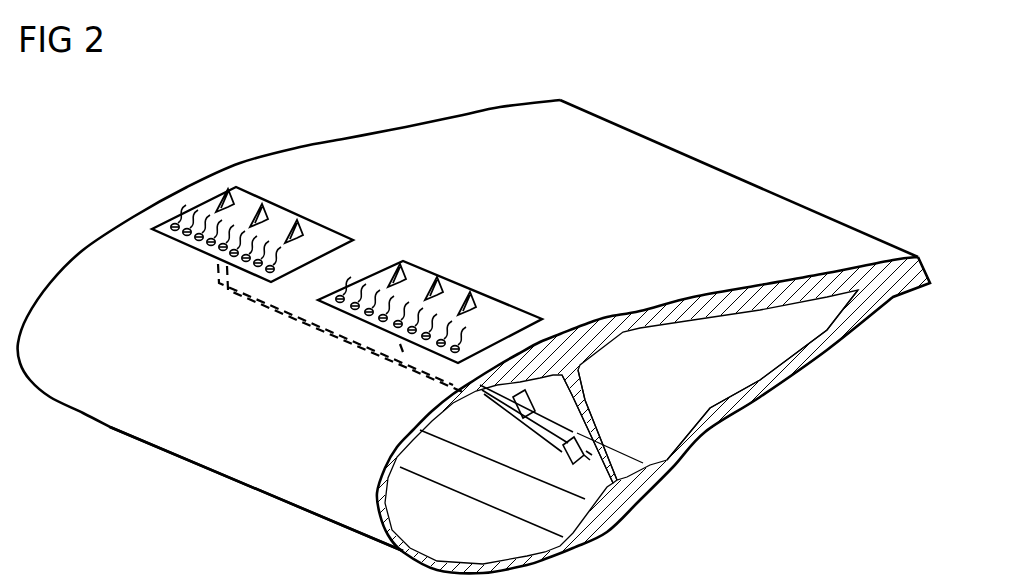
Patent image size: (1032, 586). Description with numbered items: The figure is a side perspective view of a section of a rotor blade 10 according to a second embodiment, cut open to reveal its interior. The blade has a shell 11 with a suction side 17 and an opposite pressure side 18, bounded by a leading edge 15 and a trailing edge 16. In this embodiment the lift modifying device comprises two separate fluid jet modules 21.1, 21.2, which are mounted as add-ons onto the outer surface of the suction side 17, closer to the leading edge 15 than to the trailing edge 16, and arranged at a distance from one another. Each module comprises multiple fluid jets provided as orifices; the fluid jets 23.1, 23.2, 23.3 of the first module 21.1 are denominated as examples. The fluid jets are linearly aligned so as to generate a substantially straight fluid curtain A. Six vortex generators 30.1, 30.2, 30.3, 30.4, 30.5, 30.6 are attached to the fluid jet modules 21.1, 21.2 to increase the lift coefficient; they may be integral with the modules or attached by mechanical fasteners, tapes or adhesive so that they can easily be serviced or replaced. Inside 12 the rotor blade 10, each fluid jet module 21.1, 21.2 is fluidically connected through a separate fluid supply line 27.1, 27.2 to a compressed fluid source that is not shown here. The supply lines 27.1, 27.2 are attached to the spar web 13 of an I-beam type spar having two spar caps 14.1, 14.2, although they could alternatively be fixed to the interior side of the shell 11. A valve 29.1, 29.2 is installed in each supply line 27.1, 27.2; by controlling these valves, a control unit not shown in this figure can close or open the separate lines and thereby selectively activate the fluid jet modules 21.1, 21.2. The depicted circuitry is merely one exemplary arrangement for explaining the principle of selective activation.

The rotor blade 10 is at (565, 132).
The shell 11 is at (714, 172).
The inside 12 is at (720, 360).
The spar web 13 is at (588, 382).
The spar cap 14.1 is at (570, 345).
The spar cap 14.2 is at (620, 512).
The leading edge 15 is at (183, 459).
The trailing edge 16 is at (800, 205).
The suction side 17 is at (380, 190).
The pressure side 18 is at (730, 421).
The fluid jet module 21.1 is at (165, 235).
The fluid jet module 21.2 is at (353, 319).
The fluid jet 23.1 is at (174, 224).
The fluid jet 23.2 is at (188, 229).
The fluid jet 23.3 is at (199, 240).
The fluid supply line 27.1 is at (511, 412).
The fluid supply line 27.2 is at (583, 400).
The valve 29.1 is at (563, 465).
The valve 29.2 is at (500, 420).
The vortex generator 30.1 is at (217, 198).
The vortex generator 30.2 is at (257, 212).
The vortex generator 30.3 is at (293, 224).
The vortex generator 30.4 is at (396, 262).
The vortex generator 30.5 is at (432, 278).
The vortex generator 30.6 is at (470, 292).
The fluid curtain A is at (329, 252).